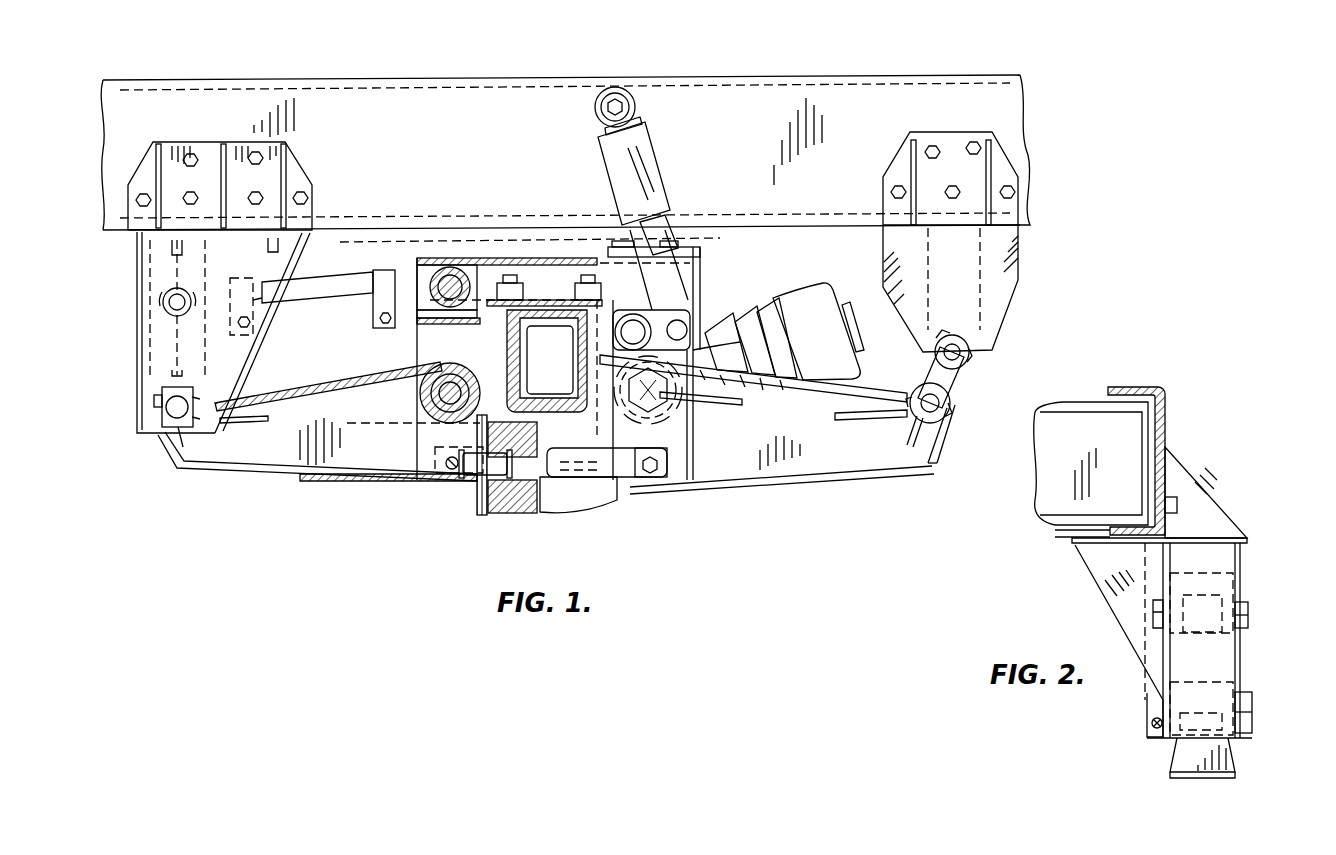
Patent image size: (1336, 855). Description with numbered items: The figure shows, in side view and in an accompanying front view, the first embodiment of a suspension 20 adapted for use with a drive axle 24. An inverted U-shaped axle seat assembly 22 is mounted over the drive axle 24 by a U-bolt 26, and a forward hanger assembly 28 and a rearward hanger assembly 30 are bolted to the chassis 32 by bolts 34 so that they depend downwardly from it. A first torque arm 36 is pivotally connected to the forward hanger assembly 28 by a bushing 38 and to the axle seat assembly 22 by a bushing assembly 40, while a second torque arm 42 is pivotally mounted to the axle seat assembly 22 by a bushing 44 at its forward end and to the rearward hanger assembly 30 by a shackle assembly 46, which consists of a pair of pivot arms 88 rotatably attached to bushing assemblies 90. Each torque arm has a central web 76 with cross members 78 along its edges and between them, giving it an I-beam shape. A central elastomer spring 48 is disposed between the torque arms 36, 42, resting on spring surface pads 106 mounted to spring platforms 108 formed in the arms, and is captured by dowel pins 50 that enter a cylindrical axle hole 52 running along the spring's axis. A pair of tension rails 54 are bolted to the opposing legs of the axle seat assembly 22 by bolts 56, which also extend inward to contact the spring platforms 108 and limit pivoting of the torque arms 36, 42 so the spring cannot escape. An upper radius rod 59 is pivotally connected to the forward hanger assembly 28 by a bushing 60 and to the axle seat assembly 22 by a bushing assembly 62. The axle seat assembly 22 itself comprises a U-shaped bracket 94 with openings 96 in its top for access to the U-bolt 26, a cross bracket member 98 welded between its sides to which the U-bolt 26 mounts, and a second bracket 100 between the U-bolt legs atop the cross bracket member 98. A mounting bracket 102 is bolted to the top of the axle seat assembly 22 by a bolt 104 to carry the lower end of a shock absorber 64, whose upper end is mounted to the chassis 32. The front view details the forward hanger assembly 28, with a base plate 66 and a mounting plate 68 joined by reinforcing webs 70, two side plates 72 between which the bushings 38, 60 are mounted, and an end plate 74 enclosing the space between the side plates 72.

In FIG. 1, the suspension 20 is at (334, 548).
In FIG. 1, the axle seat assembly 22 is at (690, 240).
In FIG. 1, the drive axle 24 is at (547, 361).
In FIG. 1, the U-bolt 26 is at (550, 360).
In FIG. 1, the forward hanger assembly 28 is at (132, 384).
In FIG. 2, the forward hanger assembly 28 is at (1232, 506).
In FIG. 1, the rearward hanger assembly 30 is at (1030, 262).
In FIG. 1, the chassis 32 is at (1018, 98).
In FIG. 2, the chassis 32 is at (1150, 390).
In FIG. 1, the bolts 34 is at (254, 192).
In FIG. 1, the first torque arm 36 is at (300, 482).
In FIG. 2, the first torque arm 36 is at (1195, 777).
In FIG. 1, the bushing 38 is at (158, 437).
In FIG. 2, the bushing 38 is at (1256, 714).
In FIG. 1, the bushing assembly 40 is at (420, 400).
In FIG. 1, the second torque arm 42 is at (815, 480).
In FIG. 1, the bushing 44 is at (680, 420).
In FIG. 1, the shackle assembly 46 is at (960, 386).
In FIG. 1, the central elastomer spring 48 is at (565, 512).
In FIG. 1, the dowel pins 50 is at (482, 516).
In FIG. 1, the axle hole 52 is at (510, 513).
In FIG. 1, the tension rails 54 is at (665, 480).
In FIG. 1, the bolts 56 is at (672, 462).
In FIG. 1, the upper radius rod 59 is at (305, 300).
In FIG. 2, the upper radius rod 59 is at (1230, 592).
In FIG. 1, the bushing 60 is at (160, 308).
In FIG. 2, the bushing 60 is at (1254, 612).
In FIG. 1, the bushing assembly 62 is at (424, 316).
In FIG. 1, the shock absorber 64 is at (612, 160).
In FIG. 1, the base plate 66 is at (128, 236).
In FIG. 2, the base plate 66 is at (1250, 540).
In FIG. 1, the mounting plate 68 is at (164, 148).
In FIG. 2, the mounting plate 68 is at (1167, 447).
In FIG. 1, the reinforcing webs 70 is at (156, 146).
In FIG. 2, the reinforcing webs 70 is at (1195, 490).
In FIG. 1, the side plates 72 is at (236, 362).
In FIG. 2, the side plates 72 is at (1242, 654).
In FIG. 1, the end plate 74 is at (137, 278).
In FIG. 2, the end plate 74 is at (1212, 662).
In FIG. 1, the central web 76 is at (892, 456).
In FIG. 1, the cross members 78 is at (862, 424).
In FIG. 1, the pivot arms 88 is at (936, 372).
In FIG. 1, the bushing assemblies 90 is at (972, 355).
In FIG. 1, the U-shaped bracket 94 is at (443, 258).
In FIG. 1, the openings 96 is at (517, 260).
In FIG. 1, the cross bracket member 98 is at (440, 326).
In FIG. 1, the second bracket 100 is at (460, 330).
In FIG. 1, the mounting bracket 102 is at (700, 300).
In FIG. 1, the bolt 104 is at (680, 252).
In FIG. 1, the spring surface pads 106 is at (478, 476).
In FIG. 1, the spring platforms 108 is at (462, 480).